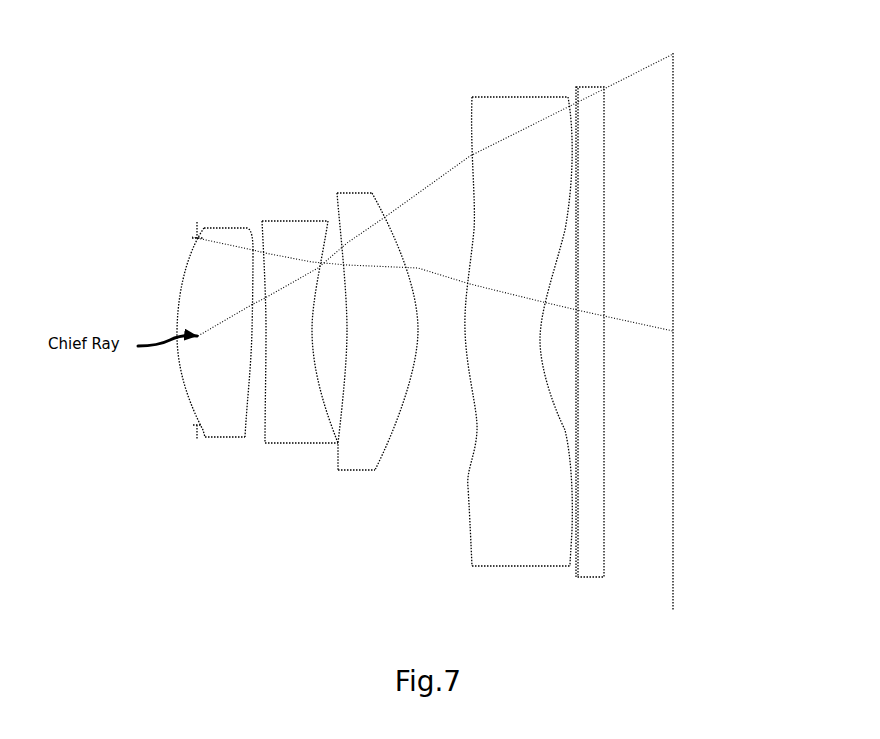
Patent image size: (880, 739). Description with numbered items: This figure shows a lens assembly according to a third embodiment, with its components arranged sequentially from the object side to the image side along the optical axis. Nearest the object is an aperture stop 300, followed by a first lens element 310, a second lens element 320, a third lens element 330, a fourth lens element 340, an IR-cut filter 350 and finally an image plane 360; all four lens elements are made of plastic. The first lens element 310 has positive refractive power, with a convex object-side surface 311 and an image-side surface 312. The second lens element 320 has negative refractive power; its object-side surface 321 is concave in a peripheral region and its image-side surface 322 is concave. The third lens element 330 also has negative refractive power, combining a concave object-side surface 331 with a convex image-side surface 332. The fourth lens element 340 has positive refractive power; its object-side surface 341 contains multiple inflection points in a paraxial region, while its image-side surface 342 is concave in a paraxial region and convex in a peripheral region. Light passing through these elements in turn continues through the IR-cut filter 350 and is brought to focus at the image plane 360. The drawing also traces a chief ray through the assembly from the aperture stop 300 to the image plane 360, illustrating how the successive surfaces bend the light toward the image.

The aperture stop 300 is at (195, 232).
The first lens element 310 is at (192, 315).
The object-side surface of the first lens element 311 is at (186, 382).
The image-side surface of the first lens element 312 is at (254, 382).
The second lens element 320 is at (283, 320).
The object-side surface of the second lens element 321 is at (274, 393).
The image-side surface of the second lens element 322 is at (317, 392).
The third lens element 330 is at (353, 328).
The object-side surface of the third lens element 331 is at (337, 448).
The image-side surface of the third lens element 332 is at (396, 422).
The fourth lens element 340 is at (497, 311).
The object-side surface of the fourth lens element 341 is at (469, 487).
The image-side surface of the fourth lens element 342 is at (572, 530).
The IR-cut filter 350 is at (587, 85).
The image plane 360 is at (677, 106).